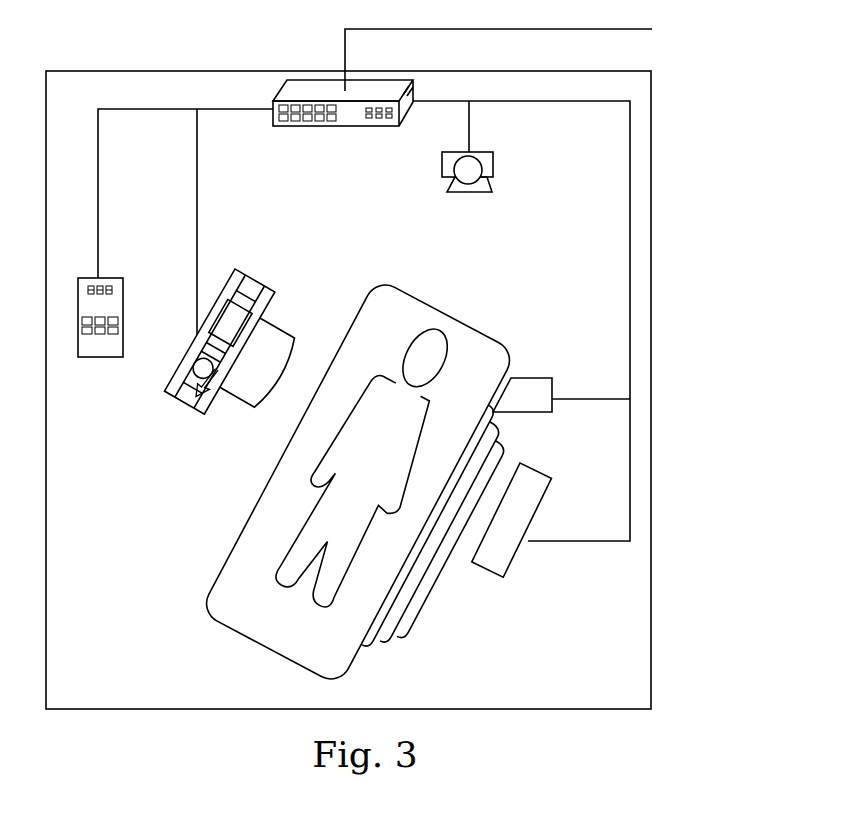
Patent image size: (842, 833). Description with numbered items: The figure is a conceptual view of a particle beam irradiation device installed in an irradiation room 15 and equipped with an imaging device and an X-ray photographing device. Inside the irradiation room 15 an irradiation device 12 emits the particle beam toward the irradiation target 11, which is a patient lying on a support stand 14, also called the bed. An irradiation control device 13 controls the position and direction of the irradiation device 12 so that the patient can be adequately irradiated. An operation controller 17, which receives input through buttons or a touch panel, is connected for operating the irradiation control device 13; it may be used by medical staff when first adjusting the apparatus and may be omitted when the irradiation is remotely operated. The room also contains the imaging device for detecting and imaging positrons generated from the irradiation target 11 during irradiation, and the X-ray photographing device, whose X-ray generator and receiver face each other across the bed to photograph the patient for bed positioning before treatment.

The irradiation target 11 is at (432, 410).
The irradiation device 12 is at (275, 338).
The irradiation control device 13 is at (245, 329).
The support stand 14 is at (374, 478).
The irradiation room 15 is at (91, 73).
The operation controller 17 is at (105, 284).